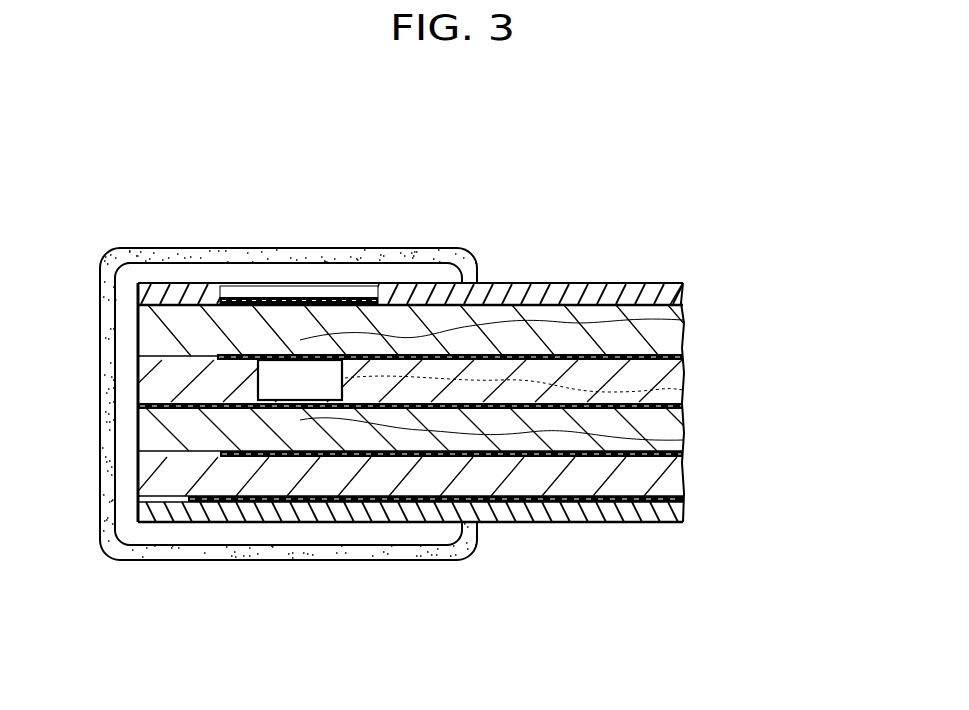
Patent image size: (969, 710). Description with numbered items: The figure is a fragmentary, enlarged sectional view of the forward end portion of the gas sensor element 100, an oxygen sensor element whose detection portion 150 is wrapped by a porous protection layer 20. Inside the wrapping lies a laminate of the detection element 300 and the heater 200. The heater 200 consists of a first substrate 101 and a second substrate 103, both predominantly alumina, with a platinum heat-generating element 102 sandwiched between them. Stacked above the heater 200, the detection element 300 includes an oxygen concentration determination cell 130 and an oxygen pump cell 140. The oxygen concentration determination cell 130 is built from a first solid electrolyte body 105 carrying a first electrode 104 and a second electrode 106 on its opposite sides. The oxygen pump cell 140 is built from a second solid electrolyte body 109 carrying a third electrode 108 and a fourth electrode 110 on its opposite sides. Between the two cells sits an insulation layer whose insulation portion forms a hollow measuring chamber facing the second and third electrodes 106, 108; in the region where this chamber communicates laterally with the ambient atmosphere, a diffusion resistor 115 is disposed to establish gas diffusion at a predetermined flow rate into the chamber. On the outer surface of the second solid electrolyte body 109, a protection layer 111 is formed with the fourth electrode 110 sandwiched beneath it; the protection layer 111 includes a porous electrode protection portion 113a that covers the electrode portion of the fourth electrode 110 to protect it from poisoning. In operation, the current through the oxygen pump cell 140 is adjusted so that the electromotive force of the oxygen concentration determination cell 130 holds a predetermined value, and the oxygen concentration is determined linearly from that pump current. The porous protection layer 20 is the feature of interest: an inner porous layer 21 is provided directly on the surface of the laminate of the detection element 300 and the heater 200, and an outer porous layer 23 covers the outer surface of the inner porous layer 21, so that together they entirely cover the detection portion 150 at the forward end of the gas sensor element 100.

The gas sensor element 100 is at (610, 193).
The detection portion 150 is at (178, 228).
The porous electrode protection portion 113a is at (315, 298).
The protection layer 111 is at (686, 292).
The fourth electrode 110 is at (688, 300).
The second solid electrolyte body 109 is at (668, 337).
The third electrode 108 is at (690, 357).
The diffusion resistor 115 is at (258, 372).
The second electrode 106 is at (690, 405).
The first solid electrolyte body 105 is at (680, 437).
The first electrode 104 is at (690, 459).
The second substrate 103 is at (688, 478).
The heat-generating element 102 is at (688, 500).
The first substrate 101 is at (662, 528).
The oxygen pump cell 140 is at (775, 284).
The oxygen concentration determination cell 130 is at (775, 387).
The heater 200 is at (775, 485).
The detection element 300 is at (458, 380).
The inner porous layer 21 is at (357, 533).
The outer porous layer 23 is at (445, 558).
The porous protection layer 20 is at (455, 636).